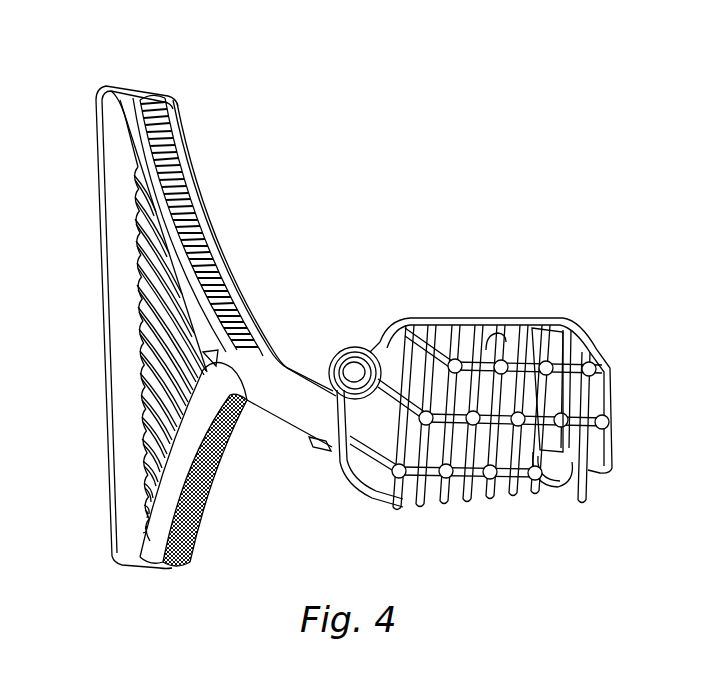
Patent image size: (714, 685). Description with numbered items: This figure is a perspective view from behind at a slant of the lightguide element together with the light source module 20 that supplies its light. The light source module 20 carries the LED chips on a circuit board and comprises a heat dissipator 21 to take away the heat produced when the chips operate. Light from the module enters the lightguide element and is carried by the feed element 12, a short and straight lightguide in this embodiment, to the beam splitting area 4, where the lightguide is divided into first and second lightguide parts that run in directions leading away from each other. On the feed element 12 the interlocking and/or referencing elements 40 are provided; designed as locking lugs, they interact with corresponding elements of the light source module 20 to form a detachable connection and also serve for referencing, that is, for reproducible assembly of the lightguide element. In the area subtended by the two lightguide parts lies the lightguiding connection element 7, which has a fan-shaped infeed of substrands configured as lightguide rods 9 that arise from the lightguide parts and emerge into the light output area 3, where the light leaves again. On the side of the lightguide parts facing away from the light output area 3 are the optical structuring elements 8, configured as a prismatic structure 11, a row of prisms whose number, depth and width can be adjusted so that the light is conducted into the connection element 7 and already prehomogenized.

The light output area 3 is at (94, 82).
The beam splitting area 4 is at (287, 340).
The lightguiding connection element 7 is at (141, 308).
The optical structuring elements 8 is at (183, 173).
The lightguide rods 9 is at (140, 383).
The prismatic structure 11 is at (177, 130).
The feed element 12 is at (291, 410).
The light source module 20 is at (526, 304).
The heat dissipator 21 is at (548, 350).
The interlocking and/or referencing elements 40 is at (317, 452).